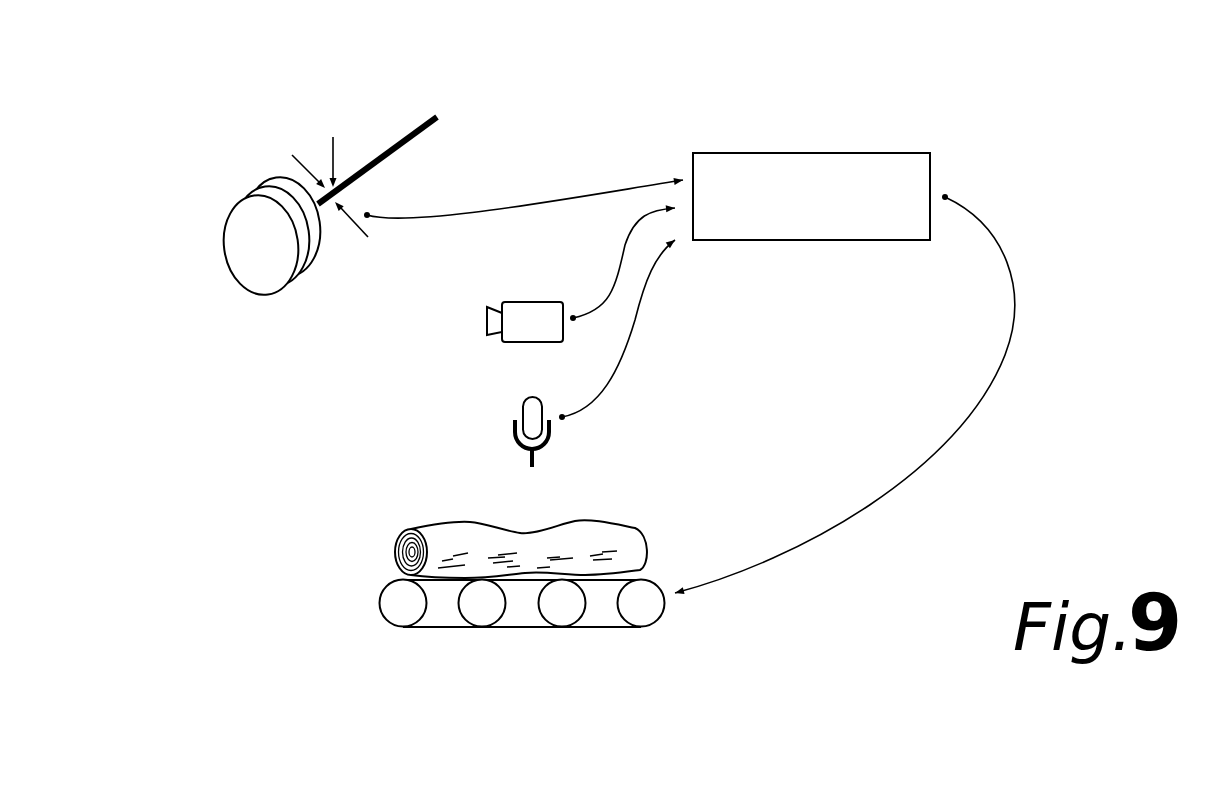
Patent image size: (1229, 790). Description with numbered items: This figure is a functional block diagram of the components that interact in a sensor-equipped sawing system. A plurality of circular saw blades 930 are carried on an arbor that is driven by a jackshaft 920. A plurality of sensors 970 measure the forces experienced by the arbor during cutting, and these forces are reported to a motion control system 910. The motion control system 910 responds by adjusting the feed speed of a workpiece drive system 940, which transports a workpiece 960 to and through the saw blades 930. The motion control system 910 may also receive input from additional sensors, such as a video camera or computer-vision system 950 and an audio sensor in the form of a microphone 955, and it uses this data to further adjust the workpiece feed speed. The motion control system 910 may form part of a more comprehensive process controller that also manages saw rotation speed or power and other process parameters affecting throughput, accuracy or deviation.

The motion control system 910 is at (900, 240).
The jackshaft 920 is at (429, 118).
The circular saw blades 930 is at (232, 275).
The workpiece drive system 940 is at (650, 625).
The video camera or computer-vision system 950 is at (522, 302).
The microphone 955 is at (515, 434).
The workpiece 960 is at (403, 533).
The sensors 970 is at (306, 138).